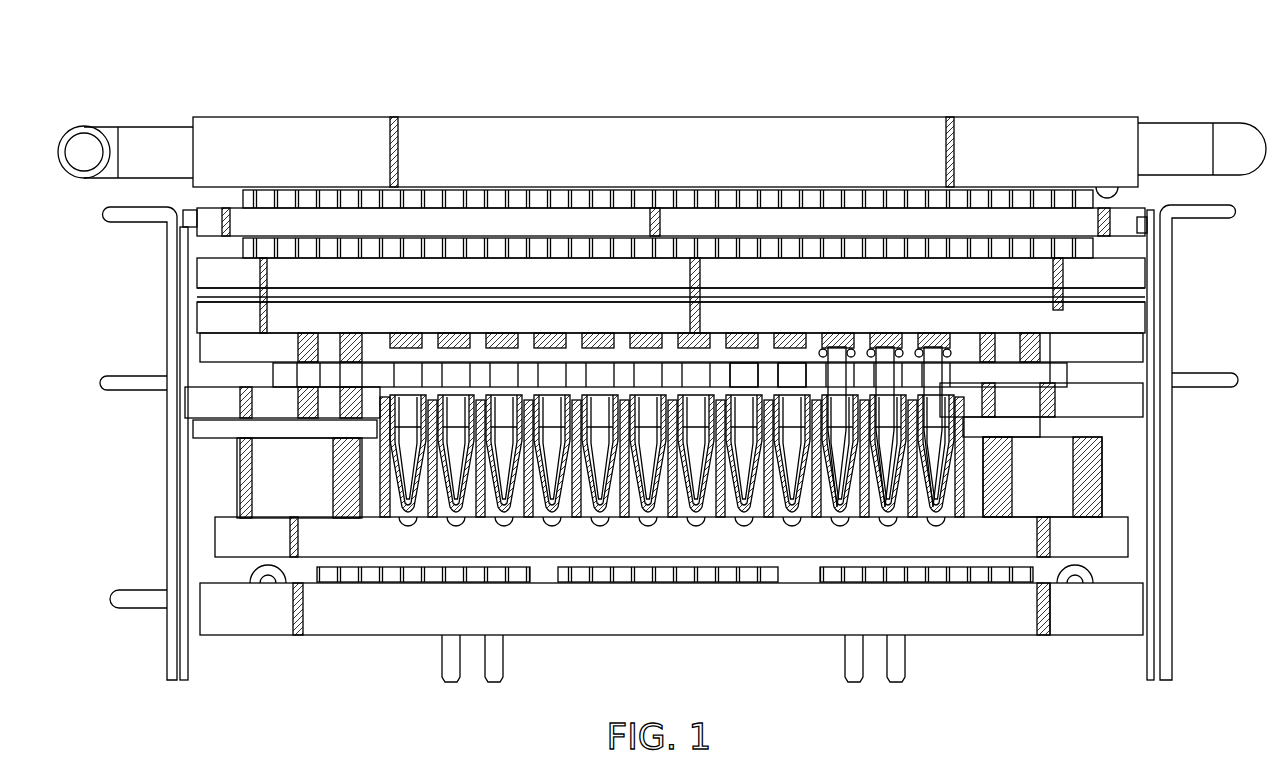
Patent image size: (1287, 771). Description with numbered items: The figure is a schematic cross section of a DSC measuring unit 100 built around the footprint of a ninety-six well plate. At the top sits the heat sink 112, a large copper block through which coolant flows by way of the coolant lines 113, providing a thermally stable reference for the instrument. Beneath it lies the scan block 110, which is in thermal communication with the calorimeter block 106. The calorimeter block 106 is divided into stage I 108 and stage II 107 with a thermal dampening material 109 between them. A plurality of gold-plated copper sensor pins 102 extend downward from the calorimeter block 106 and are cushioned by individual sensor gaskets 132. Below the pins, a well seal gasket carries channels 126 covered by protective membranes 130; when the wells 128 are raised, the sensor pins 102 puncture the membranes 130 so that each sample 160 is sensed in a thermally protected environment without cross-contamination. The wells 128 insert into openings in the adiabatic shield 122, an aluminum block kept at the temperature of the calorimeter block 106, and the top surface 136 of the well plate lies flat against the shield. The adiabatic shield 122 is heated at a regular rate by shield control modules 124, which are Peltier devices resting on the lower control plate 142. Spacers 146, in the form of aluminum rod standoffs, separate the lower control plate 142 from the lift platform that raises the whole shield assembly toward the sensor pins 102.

The DSC measuring unit 100 is at (1143, 64).
The sensor pins 102 is at (1083, 413).
The calorimeter block 106 is at (828, 329).
The stage II 107 is at (985, 315).
The stage I 108 is at (966, 270).
The thermal dampening material 109 is at (343, 298).
The scan block 110 is at (768, 230).
The heat sink 112 is at (768, 168).
The coolant lines 113 is at (83, 146).
The adiabatic shield 122 is at (776, 552).
The shield control modules 124 is at (911, 622).
The channels 126 is at (457, 375).
The wells 128 is at (918, 530).
The protective membranes 130 is at (778, 378).
The sensor gaskets 132 is at (958, 352).
The top surface 136 is at (377, 440).
The lower control plate 142 is at (1100, 617).
The spacers 146 is at (505, 656).
The sample 160 is at (472, 470).